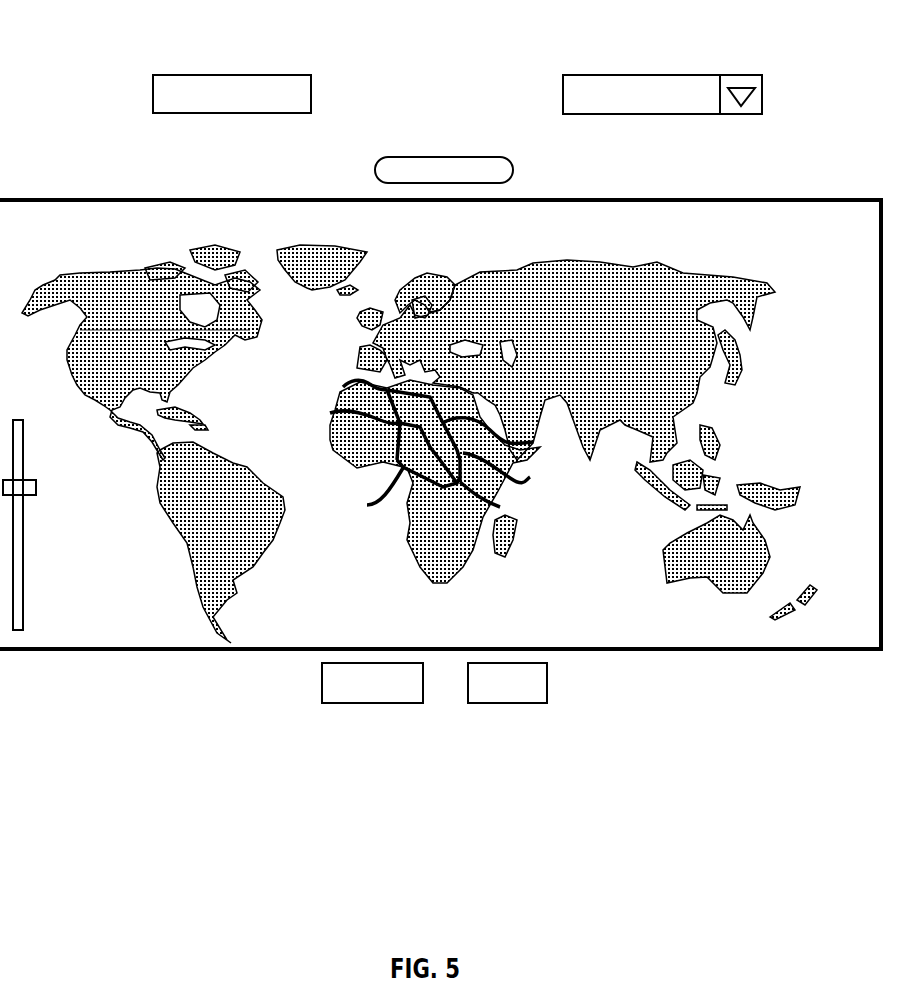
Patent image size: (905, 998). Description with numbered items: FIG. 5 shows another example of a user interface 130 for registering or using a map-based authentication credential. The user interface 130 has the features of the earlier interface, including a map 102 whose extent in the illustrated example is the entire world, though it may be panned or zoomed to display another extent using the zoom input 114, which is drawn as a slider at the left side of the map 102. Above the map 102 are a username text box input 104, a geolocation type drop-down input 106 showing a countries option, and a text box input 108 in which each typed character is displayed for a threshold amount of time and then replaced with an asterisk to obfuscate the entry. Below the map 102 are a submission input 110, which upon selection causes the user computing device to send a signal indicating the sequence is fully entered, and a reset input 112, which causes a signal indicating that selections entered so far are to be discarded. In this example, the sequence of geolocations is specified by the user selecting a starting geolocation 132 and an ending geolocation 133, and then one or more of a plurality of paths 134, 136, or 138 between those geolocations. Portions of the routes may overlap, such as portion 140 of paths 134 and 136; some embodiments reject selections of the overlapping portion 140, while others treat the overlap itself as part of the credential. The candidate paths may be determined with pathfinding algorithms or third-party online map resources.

The user interface 130 is at (449, 70).
The map 102 is at (685, 200).
The username text box input 104 is at (311, 95).
The geolocation type drop-down input 106 is at (563, 101).
The text box input 108 is at (513, 170).
The submission input 110 is at (322, 690).
The reset input 112 is at (547, 676).
The zoom input 114 is at (23, 548).
The starting geolocation 132 is at (386, 430).
The ending geolocation 133 is at (496, 497).
The path 134 is at (366, 490).
The path 136 is at (514, 468).
The path 138 is at (504, 432).
The overlapping portion 140 is at (348, 412).